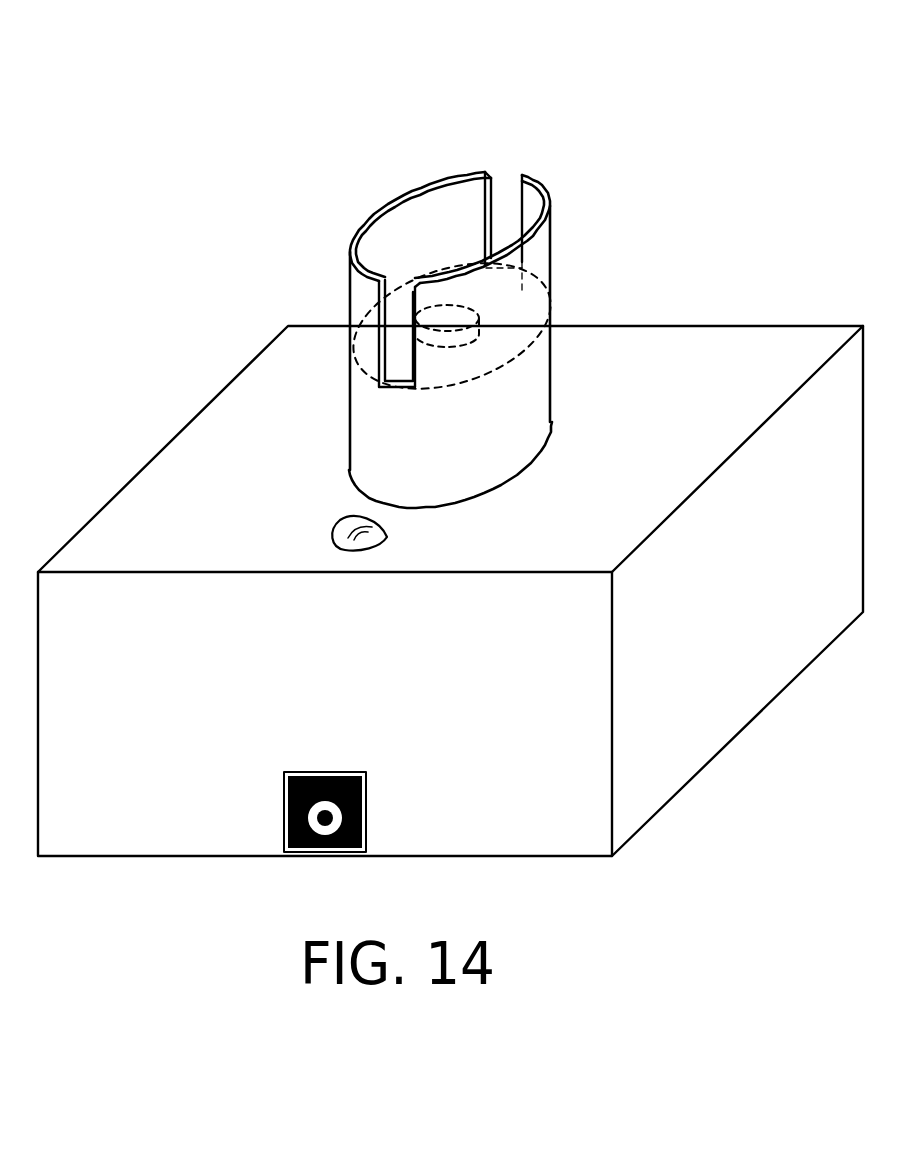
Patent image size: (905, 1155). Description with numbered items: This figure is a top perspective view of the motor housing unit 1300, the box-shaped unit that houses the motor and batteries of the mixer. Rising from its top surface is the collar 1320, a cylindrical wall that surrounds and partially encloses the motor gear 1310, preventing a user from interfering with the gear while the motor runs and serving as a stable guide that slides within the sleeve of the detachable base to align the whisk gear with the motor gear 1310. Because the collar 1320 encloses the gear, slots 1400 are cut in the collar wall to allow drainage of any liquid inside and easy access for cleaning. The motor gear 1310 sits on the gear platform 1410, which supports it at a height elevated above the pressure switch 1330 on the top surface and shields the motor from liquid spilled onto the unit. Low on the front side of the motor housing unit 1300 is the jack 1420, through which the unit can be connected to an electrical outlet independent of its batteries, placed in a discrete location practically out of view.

The motor housing unit 1300 is at (650, 40).
The slots 1400 is at (512, 172).
The collar 1320 is at (550, 200).
The gear platform 1410 is at (532, 282).
The motor gear 1310 is at (478, 315).
The pressure switch 1330 is at (387, 540).
The jack 1420 is at (366, 806).